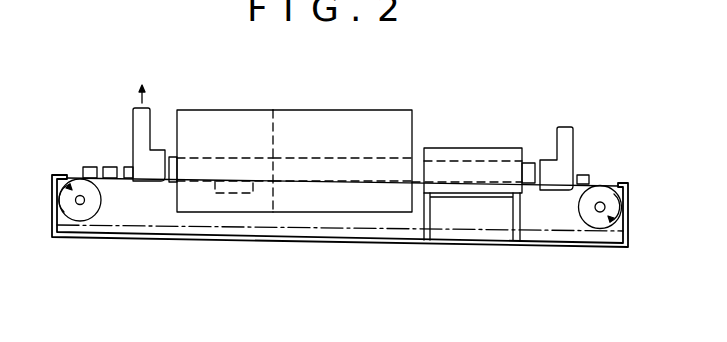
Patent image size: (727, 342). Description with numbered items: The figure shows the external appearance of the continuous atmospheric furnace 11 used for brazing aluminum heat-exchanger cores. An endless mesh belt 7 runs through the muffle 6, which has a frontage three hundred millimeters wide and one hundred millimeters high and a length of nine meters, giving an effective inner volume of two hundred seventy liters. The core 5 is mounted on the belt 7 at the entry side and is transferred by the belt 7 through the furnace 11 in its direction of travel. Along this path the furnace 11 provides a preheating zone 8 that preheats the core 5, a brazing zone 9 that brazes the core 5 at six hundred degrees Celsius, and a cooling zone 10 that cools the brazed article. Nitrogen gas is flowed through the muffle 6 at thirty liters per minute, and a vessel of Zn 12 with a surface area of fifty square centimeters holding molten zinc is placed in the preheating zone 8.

The core 5 is at (85, 167).
The muffle 6 is at (172, 156).
The endless mesh belt 7 is at (135, 226).
The preheating zone 8 is at (227, 120).
The brazing zone 9 is at (357, 119).
The cooling zone 10 is at (469, 155).
The continuous atmospheric furnace 11 is at (323, 246).
The vessel of Zn 12 is at (232, 188).